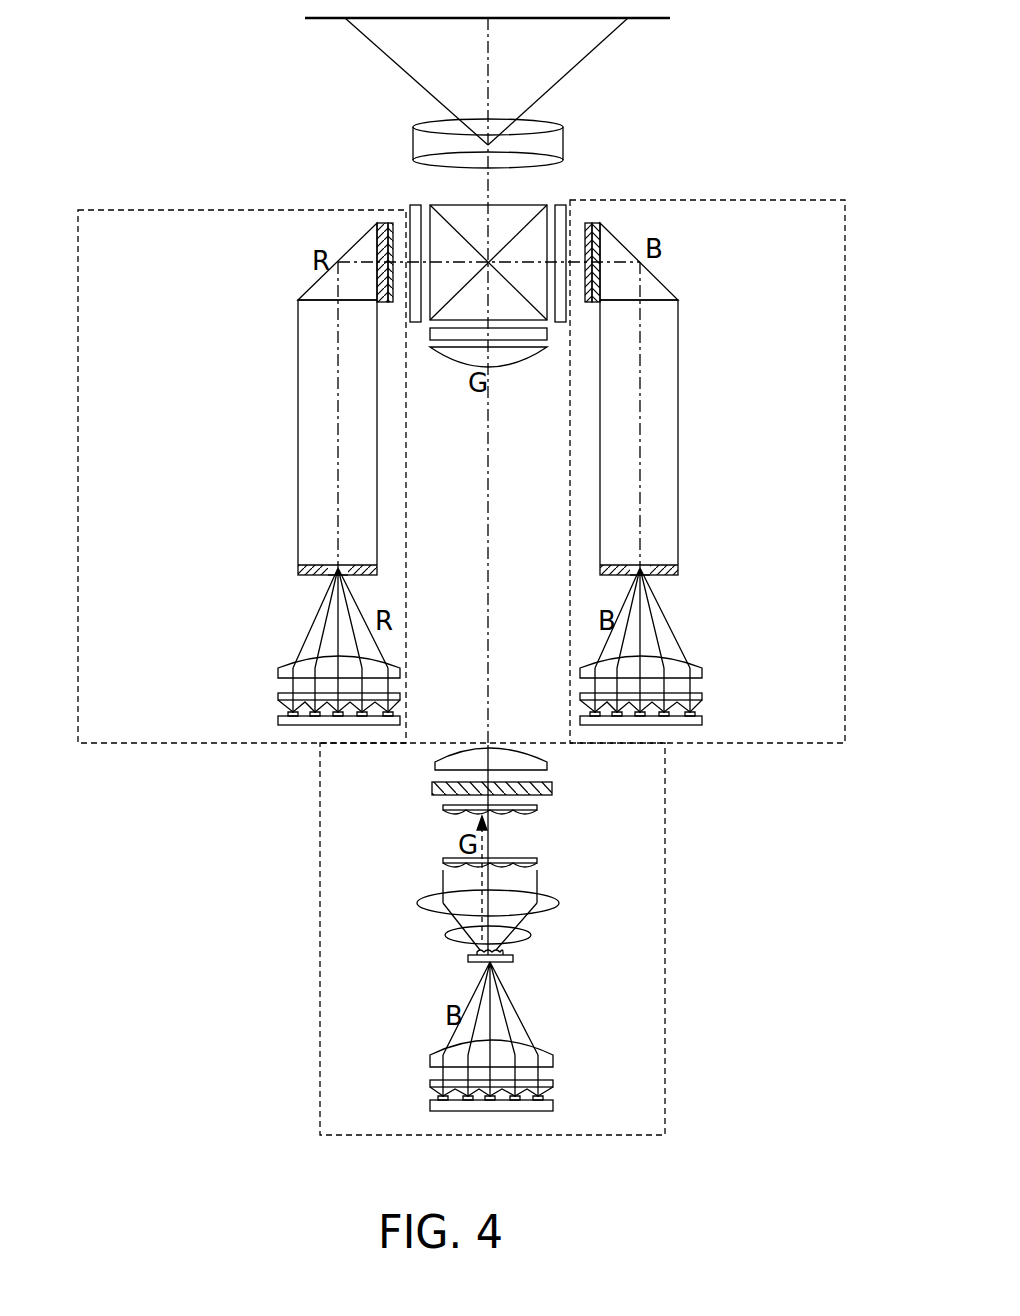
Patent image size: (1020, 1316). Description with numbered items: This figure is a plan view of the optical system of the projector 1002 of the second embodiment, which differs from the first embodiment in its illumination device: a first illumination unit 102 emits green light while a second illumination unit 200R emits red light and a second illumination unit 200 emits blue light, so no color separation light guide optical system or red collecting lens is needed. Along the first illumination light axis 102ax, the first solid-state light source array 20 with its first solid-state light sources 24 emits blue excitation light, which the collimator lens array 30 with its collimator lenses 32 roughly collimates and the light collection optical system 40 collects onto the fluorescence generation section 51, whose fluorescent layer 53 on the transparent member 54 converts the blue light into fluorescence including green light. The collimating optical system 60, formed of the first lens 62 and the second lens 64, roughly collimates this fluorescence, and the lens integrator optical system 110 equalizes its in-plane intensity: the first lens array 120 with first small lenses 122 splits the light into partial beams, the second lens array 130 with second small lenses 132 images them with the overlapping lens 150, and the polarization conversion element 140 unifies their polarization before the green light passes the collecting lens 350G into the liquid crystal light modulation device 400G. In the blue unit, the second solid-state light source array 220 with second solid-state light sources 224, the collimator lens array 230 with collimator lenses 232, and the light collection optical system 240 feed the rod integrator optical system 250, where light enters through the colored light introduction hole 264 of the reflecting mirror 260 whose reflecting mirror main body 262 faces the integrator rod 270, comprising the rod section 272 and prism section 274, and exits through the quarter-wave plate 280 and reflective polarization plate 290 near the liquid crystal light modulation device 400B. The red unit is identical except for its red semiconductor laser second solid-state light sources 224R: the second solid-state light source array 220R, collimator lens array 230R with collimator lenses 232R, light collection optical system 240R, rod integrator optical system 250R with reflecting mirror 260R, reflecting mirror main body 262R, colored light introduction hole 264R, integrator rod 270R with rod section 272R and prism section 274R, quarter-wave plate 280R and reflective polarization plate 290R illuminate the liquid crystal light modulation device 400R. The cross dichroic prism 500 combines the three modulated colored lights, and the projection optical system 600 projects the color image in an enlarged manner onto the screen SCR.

The projector 1002 is at (848, 34).
The screen SCR is at (656, 18).
The projection optical system 600 is at (413, 138).
The cross dichroic prism 500 is at (527, 205).
The liquid crystal light modulation device 400R is at (415, 205).
The liquid crystal light modulation device 400G is at (548, 334).
The liquid crystal light modulation device 400B is at (563, 205).
The collecting lens 350G is at (432, 352).
The reflective polarization plate 290R is at (391, 224).
The λ/4 plate 280R is at (380, 226).
The prism section 274R is at (318, 280).
The rod section 272R is at (298, 372).
The integrator rod 270R is at (223, 270).
The rod integrator optical system 250R is at (153, 213).
The reflecting mirror 260R is at (224, 555).
The reflecting mirror main body 262R is at (298, 568).
The colored light introduction hole 264R is at (328, 578).
The light collection optical system 240R is at (295, 670).
The collimator lens array 230R is at (290, 694).
The collimator lens 232R is at (278, 704).
The second solid-state light source 224R is at (288, 715).
The second solid-state light source array 220R is at (278, 721).
The second illumination unit 200R is at (240, 745).
The reflective polarization plate 290 is at (587, 224).
The λ/4 plate 280 is at (597, 226).
The prism section 274 is at (658, 278).
The rod section 272 is at (678, 371).
The integrator rod 270 is at (737, 268).
The rod integrator optical system 250 is at (789, 205).
The reflecting mirror 260 is at (737, 553).
The reflecting mirror main body 262 is at (678, 568).
The colored light introduction hole 264 is at (652, 578).
The light collection optical system 240 is at (700, 670).
The collimator lens array 230 is at (702, 694).
The collimator lens 232 is at (704, 704).
The second solid-state light source 224 is at (695, 715).
The second solid-state light source array 220 is at (704, 721).
The second illumination unit 200 is at (745, 745).
The first illumination unit 102 is at (538, 1137).
The first illumination light axis 102ax is at (490, 527).
The lens integrator optical system 110 is at (606, 760).
The overlapping lens 150 is at (547, 766).
The polarization conversion element 140 is at (552, 790).
The second lens array 130 is at (537, 810).
The second small lens 132 is at (445, 812).
The first lens array 120 is at (537, 862).
The first small lens 122 is at (445, 866).
The collimating optical system 60 is at (359, 895).
The second lens 64 is at (425, 903).
The first lens 62 is at (447, 937).
The fluorescence generation section 51 is at (586, 923).
The fluorescent layer 53 is at (503, 952).
The transparent member 54 is at (513, 960).
The light collection optical system 40 is at (553, 1062).
The collimator lens array 30 is at (558, 1085).
The collimator lens 32 is at (436, 1090).
The first solid-state light source 24 is at (440, 1098).
The first solid-state light source array 20 is at (558, 1106).